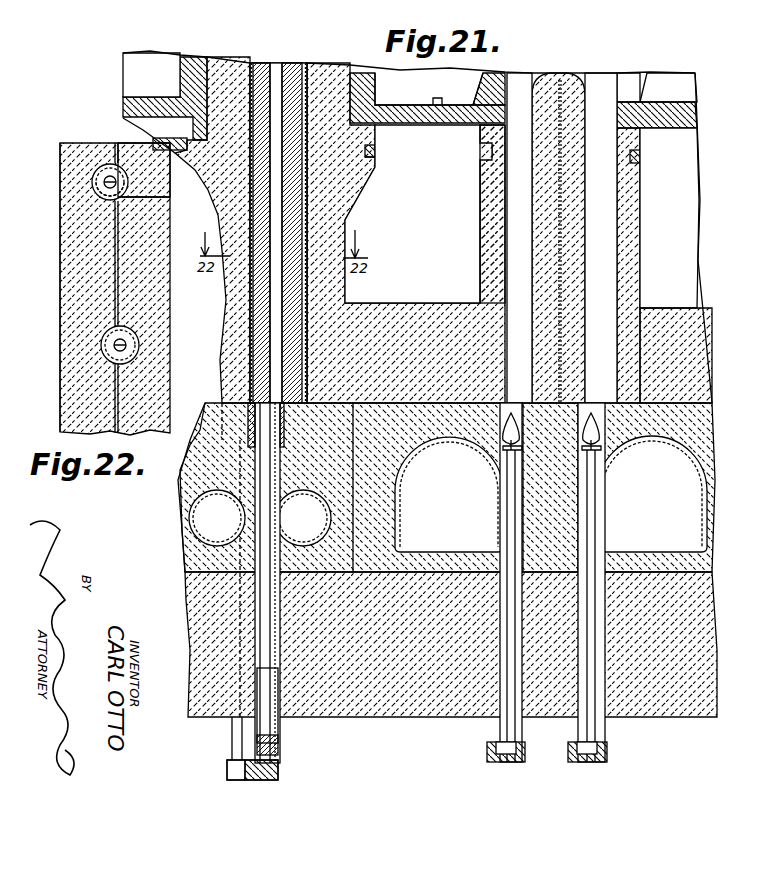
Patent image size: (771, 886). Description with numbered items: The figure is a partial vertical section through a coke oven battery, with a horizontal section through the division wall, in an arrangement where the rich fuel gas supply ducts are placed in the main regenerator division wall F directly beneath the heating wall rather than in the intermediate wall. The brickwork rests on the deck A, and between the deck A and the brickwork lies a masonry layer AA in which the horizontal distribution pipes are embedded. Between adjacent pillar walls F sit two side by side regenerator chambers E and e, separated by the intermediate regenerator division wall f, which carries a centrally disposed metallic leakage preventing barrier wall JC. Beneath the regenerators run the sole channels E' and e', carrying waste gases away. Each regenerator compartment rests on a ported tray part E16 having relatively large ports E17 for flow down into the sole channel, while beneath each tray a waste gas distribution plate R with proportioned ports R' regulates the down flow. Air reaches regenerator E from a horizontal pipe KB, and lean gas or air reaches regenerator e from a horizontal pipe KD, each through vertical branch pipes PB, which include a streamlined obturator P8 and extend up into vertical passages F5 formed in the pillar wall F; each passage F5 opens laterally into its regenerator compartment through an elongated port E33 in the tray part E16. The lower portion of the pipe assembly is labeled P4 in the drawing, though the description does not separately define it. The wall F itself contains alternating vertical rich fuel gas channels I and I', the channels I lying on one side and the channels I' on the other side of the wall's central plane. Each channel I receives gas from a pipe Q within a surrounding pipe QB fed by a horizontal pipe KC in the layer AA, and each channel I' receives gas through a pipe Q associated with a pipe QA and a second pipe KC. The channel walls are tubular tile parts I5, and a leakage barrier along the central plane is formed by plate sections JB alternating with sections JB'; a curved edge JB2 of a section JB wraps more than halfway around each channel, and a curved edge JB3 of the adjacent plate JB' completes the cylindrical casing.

In FIG. 21, the pillar wall F is at (332, 206).
In FIG. 22, the pillar wall F is at (60, 232).
In FIG. 21, the regenerator chamber E is at (410, 96).
In FIG. 21, the waste gas distribution plate R is at (433, 144).
In FIG. 21, the port R' is at (428, 171).
In FIG. 21, the regenerator chamber e is at (427, 98).
In FIG. 21, the lateral port E33 is at (495, 76).
In FIG. 21, the tray part E16 is at (458, 103).
In FIG. 21, the port E17 is at (440, 101).
In FIG. 21, the sole channel e' is at (418, 214).
In FIG. 21, the intermediate regenerator division wall f is at (480, 190).
In FIG. 21, the vertical passage F5 is at (513, 213).
In FIG. 21, the sole channel E' is at (676, 238).
In FIG. 21, the metallic barrier wall JC is at (567, 80).
In FIG. 21, the rich fuel gas supply channel I is at (278, 220).
In FIG. 22, the rich fuel gas supply channel I is at (140, 345).
In FIG. 21, the curved edge portion JB3 is at (250, 66).
In FIG. 22, the curved edge portion JB3 is at (107, 330).
In FIG. 21, the curved edge portion JB2 is at (307, 66).
In FIG. 22, the curved edge portion JB2 is at (92, 178).
In FIG. 21, the tubular tile part I5 is at (300, 290).
In FIG. 22, the tubular tile part I5 is at (97, 193).
In FIG. 21, the deck A is at (190, 608).
In FIG. 21, the masonry layer AA is at (182, 484).
In FIG. 21, the rich fuel gas supply channel I' is at (211, 560).
In FIG. 22, the rich fuel gas supply channel I' is at (83, 156).
In FIG. 21, the horizontal gas supply pipe KC is at (260, 518).
In FIG. 21, the horizontal pipe KD is at (449, 494).
In FIG. 21, the horizontal pipe KB is at (652, 494).
In FIG. 21, the burner pipe P4 is at (507, 725).
In FIG. 21, the vertical branch pipe PB is at (518, 730).
In FIG. 21, the obturator P8 is at (508, 428).
In FIG. 21, the gas pipe Q is at (288, 583).
In FIG. 21, the surrounding pipe QB is at (282, 748).
In FIG. 21, the pipe QA is at (232, 746).
In FIG. 21, the rod foot Q' is at (274, 776).
In FIG. 22, the plate section JB is at (97, 289).
In FIG. 22, the plate section JB' is at (70, 273).